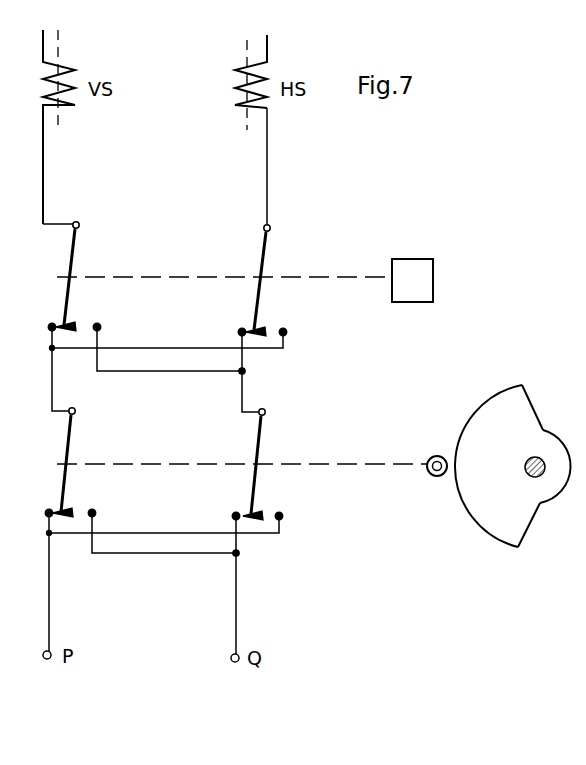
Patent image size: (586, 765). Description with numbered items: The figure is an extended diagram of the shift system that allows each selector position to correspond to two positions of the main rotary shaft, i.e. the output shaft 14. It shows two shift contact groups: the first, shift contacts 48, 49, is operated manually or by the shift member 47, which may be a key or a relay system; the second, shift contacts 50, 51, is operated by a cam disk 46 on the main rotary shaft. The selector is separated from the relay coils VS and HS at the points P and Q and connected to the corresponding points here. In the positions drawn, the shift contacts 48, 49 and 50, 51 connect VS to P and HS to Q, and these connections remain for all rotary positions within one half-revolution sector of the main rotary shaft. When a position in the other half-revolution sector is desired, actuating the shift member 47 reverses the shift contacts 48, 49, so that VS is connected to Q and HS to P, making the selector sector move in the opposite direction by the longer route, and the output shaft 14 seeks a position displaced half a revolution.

The output shaft 14 is at (544, 433).
The cam disk 46 is at (489, 524).
The shift member 47 is at (424, 275).
The shift contact 48 is at (77, 250).
The shift contact 49 is at (268, 250).
The shift contact 50 is at (67, 441).
The shift contact 51 is at (263, 443).